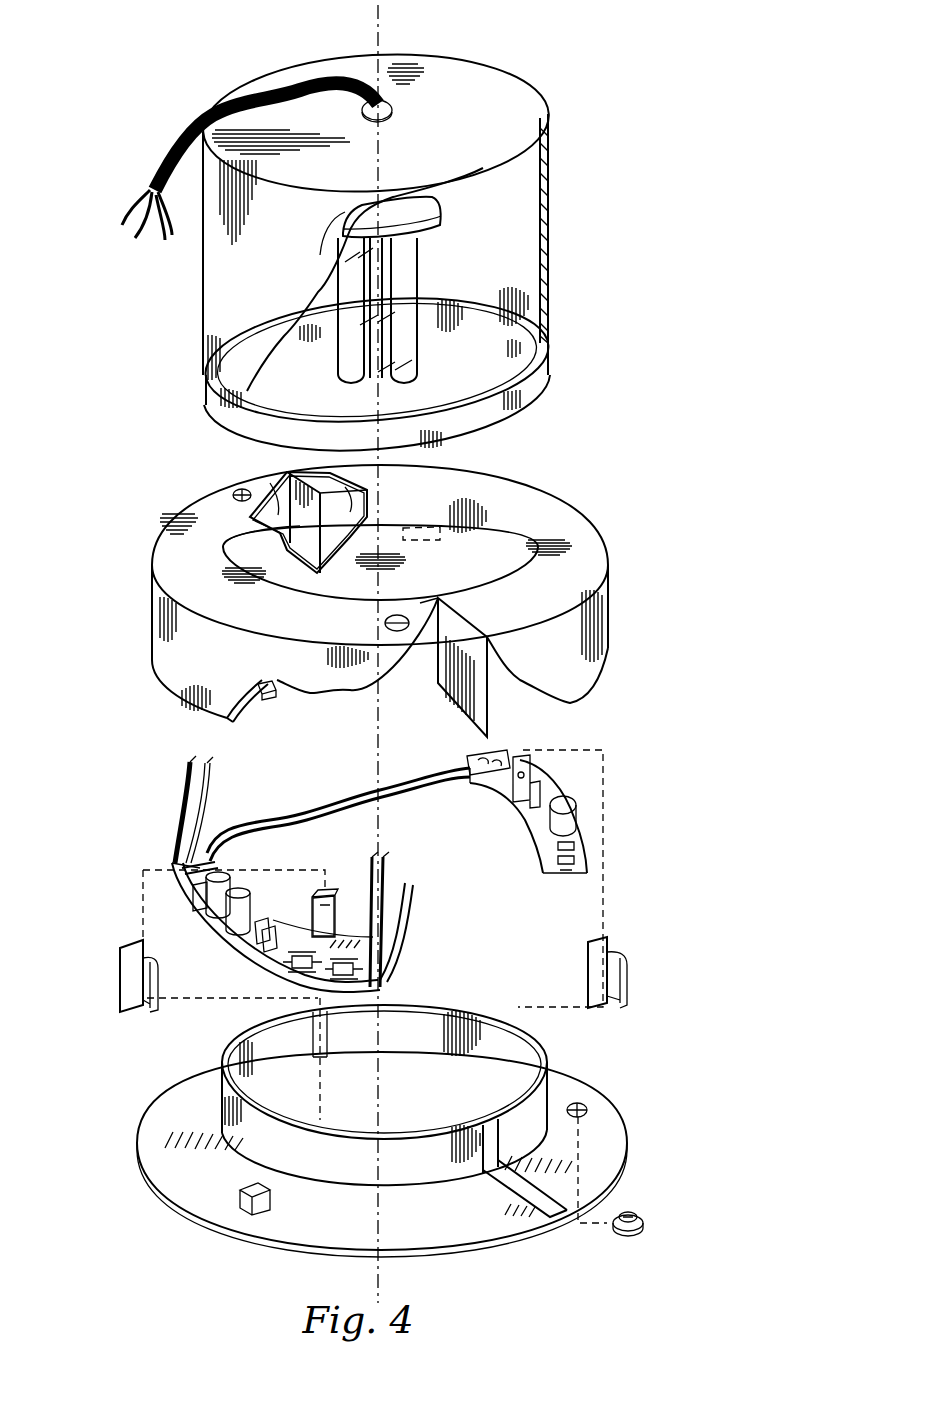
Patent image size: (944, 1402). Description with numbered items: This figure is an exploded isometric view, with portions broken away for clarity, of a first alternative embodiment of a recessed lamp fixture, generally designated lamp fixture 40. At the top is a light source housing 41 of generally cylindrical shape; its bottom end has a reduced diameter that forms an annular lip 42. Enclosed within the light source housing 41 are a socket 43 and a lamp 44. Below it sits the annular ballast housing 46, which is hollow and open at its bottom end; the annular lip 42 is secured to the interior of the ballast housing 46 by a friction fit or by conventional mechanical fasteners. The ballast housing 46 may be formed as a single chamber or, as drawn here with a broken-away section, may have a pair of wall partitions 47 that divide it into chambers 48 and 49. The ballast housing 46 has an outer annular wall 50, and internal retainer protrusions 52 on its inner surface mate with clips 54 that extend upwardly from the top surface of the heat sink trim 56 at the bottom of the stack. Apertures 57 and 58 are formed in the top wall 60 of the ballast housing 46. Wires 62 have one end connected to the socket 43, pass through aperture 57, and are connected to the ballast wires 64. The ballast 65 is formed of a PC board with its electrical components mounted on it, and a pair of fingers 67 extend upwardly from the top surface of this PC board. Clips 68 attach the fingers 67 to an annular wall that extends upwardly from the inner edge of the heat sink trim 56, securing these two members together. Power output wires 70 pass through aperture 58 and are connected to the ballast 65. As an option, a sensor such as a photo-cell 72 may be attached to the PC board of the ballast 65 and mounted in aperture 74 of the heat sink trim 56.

The lamp fixture 40 is at (133, 118).
The light source housing 41 is at (440, 113).
The annular lip 42 is at (480, 423).
The socket 43 is at (427, 198).
The lamp 44 is at (390, 293).
The ballast housing 46 is at (606, 612).
The wall partitions 47 is at (492, 722).
The chamber 48 is at (277, 470).
The chamber 49 is at (365, 500).
The outer annular wall 50 is at (533, 665).
The internal retainer protrusions 52 is at (365, 492).
The clips 54 is at (253, 1190).
The heat sink trim 56 is at (410, 1205).
The aperture 57 is at (402, 617).
The aperture 58 is at (240, 493).
The top wall 60 is at (518, 514).
The wires 62 is at (150, 187).
The ballast wires 64 is at (393, 855).
The ballast 65 is at (132, 890).
The fingers 67 is at (337, 903).
The clips 68 is at (133, 980).
The power output wires 70 is at (207, 755).
The photo-cell 72 is at (627, 1212).
The aperture 74 is at (577, 1103).